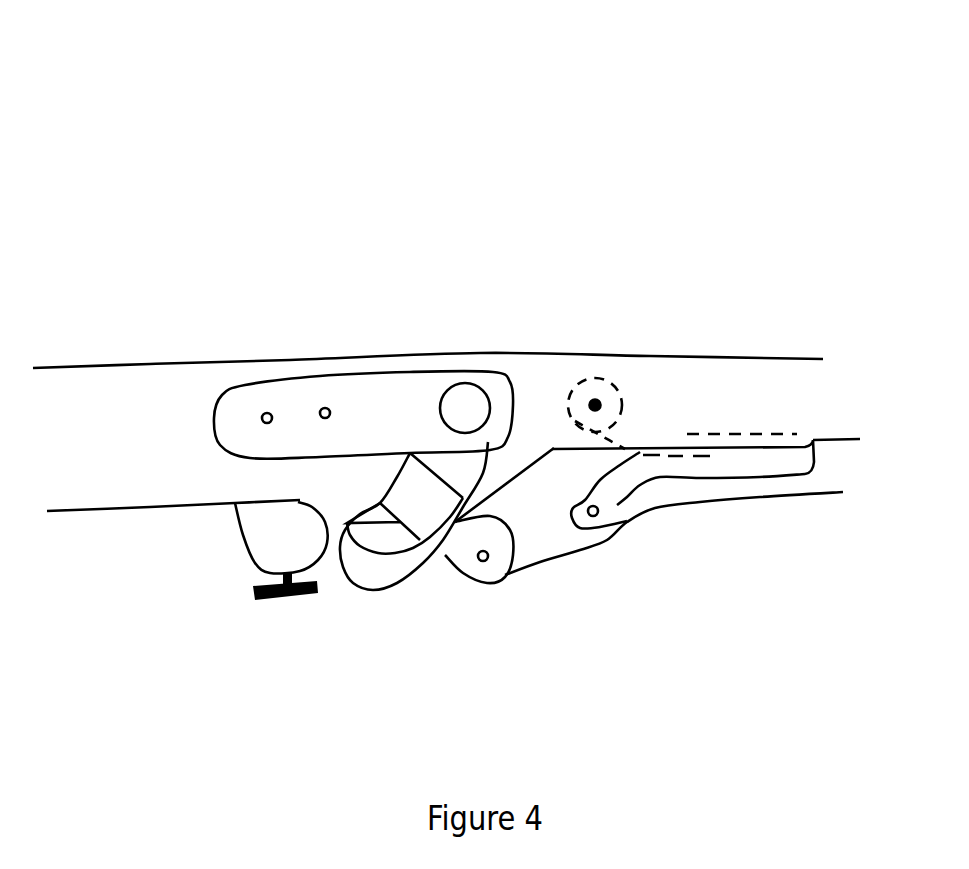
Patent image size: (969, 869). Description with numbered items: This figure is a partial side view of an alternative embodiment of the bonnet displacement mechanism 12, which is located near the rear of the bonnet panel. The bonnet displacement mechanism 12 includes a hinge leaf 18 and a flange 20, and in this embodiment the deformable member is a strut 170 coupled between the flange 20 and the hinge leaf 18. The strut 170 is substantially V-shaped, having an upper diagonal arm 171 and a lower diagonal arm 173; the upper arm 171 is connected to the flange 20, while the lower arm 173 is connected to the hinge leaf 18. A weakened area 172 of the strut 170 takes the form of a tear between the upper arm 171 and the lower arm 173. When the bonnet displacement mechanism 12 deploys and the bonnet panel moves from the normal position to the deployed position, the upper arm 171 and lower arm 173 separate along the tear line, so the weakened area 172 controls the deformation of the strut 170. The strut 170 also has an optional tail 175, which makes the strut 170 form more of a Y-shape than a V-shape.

The bonnet displacement mechanism 12 is at (350, 168).
The flange 20 is at (115, 388).
The hinge leaf 18 is at (543, 540).
The strut 170 is at (657, 482).
The upper arm 171 is at (628, 408).
The weakened area 172 is at (677, 450).
The lower arm 173 is at (623, 497).
The tail 175 is at (773, 462).